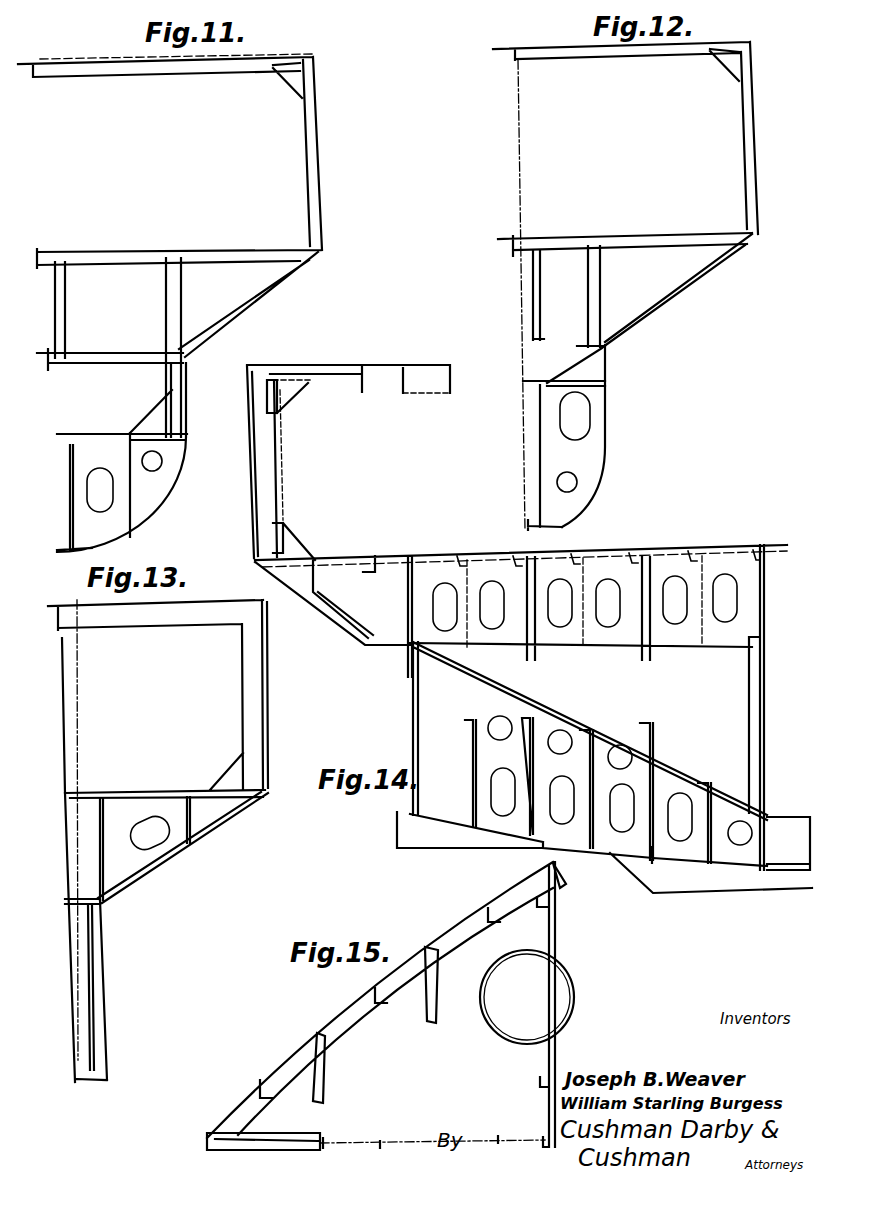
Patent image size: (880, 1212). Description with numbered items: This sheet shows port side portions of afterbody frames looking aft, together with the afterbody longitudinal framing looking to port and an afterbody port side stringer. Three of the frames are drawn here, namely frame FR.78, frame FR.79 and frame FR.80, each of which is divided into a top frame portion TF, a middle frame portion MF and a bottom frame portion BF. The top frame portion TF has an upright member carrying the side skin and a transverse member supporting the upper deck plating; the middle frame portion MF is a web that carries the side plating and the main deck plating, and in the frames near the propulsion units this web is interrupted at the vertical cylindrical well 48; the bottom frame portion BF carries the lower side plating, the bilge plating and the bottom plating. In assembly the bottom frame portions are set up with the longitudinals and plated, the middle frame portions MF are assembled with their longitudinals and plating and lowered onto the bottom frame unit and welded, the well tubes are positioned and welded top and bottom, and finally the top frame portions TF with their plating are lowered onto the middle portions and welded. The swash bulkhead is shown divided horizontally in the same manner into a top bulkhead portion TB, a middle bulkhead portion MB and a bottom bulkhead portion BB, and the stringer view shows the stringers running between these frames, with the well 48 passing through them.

In FIG. 11, the top frame portion TF is at (303, 139).
In FIG. 12, the top frame portion TF is at (741, 116).
In FIG. 13, the top frame portion TF is at (242, 686).
In FIG. 11, the middle frame portion MF is at (148, 350).
In FIG. 12, the middle frame portion MF is at (592, 318).
In FIG. 13, the middle frame portion MF is at (173, 842).
In FIG. 11, the bottom frame portion BF is at (170, 386).
In FIG. 12, the bottom frame portion BF is at (540, 410).
In FIG. 13, the bottom frame portion BF is at (103, 953).
In FIG. 14, the top bulkhead portion TB is at (277, 457).
In FIG. 14, the middle bulkhead portion MB is at (388, 619).
In FIG. 14, the bottom bulkhead portion BB is at (663, 740).
In FIG. 15, the vertical cylindrical well 48 is at (559, 975).
In FIG. 11, the frame 78 FR.78 is at (170, 303).
In FIG. 12, the frame 79 FR.79 is at (625, 286).
In FIG. 13, the frame 80 FR.80 is at (158, 841).